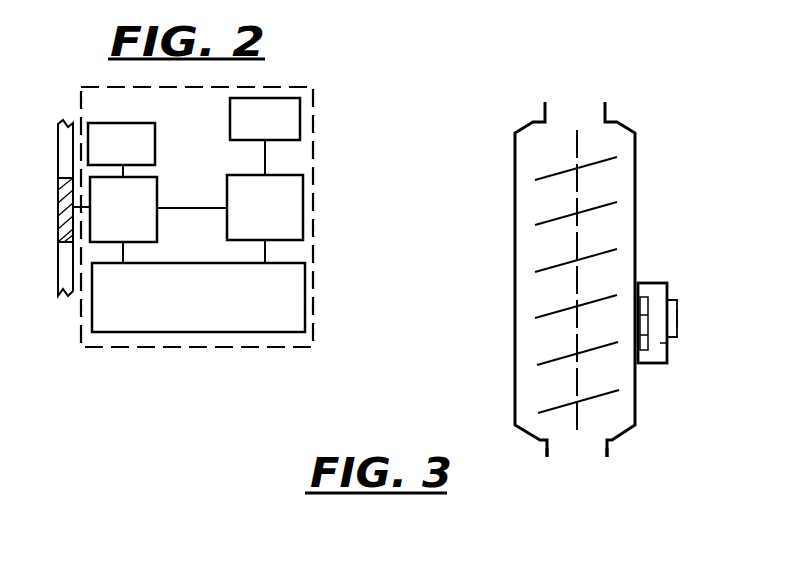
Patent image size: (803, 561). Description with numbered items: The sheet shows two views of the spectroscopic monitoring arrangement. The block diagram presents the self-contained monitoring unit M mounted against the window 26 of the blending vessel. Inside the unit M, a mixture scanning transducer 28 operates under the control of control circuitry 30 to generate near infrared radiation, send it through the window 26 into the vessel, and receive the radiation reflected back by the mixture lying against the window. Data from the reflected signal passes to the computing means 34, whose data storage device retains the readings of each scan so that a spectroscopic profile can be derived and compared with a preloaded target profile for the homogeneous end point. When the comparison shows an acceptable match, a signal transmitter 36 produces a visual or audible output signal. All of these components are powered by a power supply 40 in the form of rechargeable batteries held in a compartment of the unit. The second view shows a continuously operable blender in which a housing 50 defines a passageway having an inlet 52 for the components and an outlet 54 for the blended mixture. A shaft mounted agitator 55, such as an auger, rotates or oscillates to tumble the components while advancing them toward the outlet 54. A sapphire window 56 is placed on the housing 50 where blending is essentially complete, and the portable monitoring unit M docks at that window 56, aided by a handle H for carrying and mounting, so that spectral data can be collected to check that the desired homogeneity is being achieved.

In FIG. 2, the window 26 is at (60, 218).
In FIG. 2, the mixture scanning transducer 28 is at (158, 220).
In FIG. 2, the control circuitry 30 is at (121, 150).
In FIG. 2, the computing means 34 is at (265, 219).
In FIG. 2, the signal transmitter 36 is at (265, 136).
In FIG. 2, the power supply 40 is at (198, 297).
In FIG. 2, the monitoring unit M is at (334, 108).
In FIG. 3, the monitoring unit M is at (660, 343).
In FIG. 3, the housing 50 is at (637, 203).
In FIG. 3, the inlet 52 is at (577, 110).
In FIG. 3, the outlet 54 is at (578, 452).
In FIG. 3, the shaft mounted agitator 55 is at (551, 297).
In FIG. 3, the window 56 is at (637, 323).
In FIG. 3, the handle H is at (674, 323).